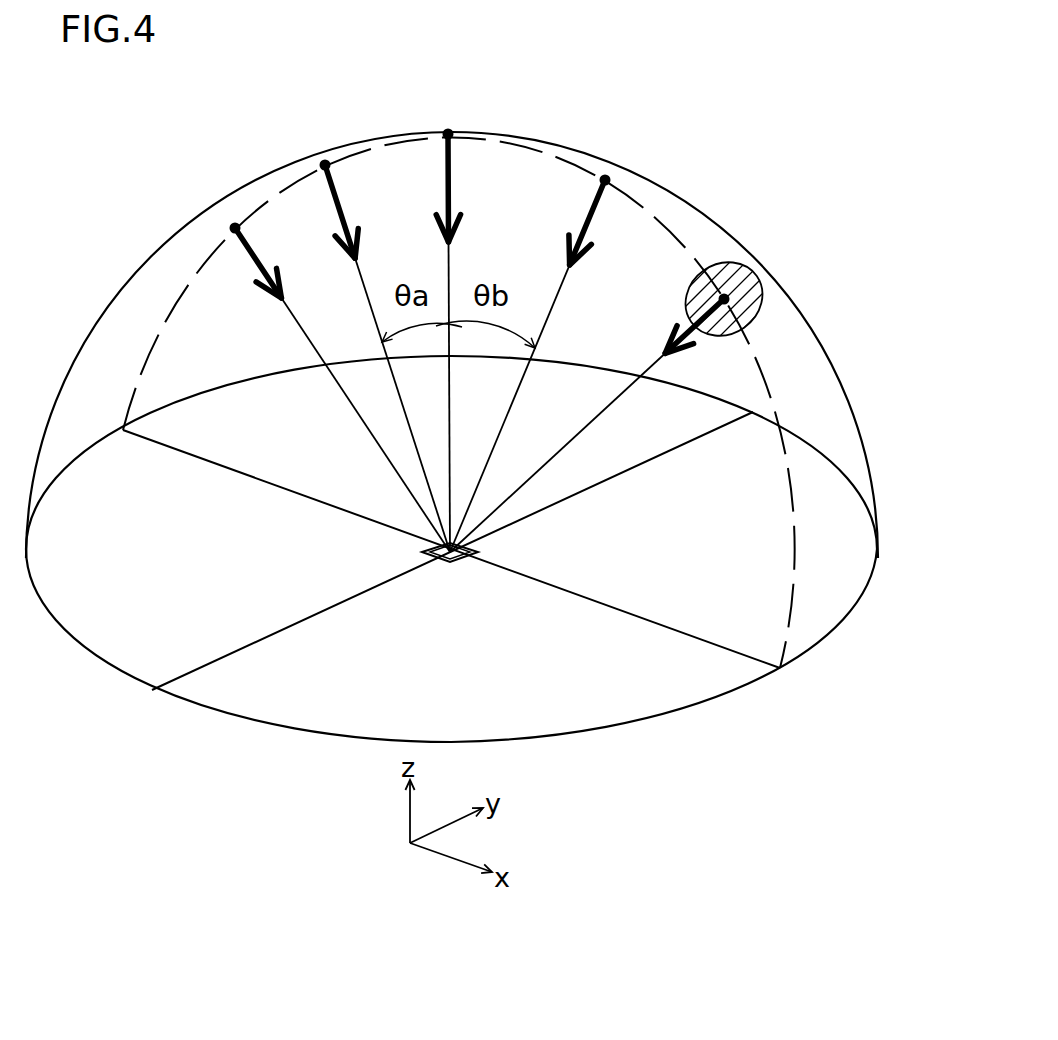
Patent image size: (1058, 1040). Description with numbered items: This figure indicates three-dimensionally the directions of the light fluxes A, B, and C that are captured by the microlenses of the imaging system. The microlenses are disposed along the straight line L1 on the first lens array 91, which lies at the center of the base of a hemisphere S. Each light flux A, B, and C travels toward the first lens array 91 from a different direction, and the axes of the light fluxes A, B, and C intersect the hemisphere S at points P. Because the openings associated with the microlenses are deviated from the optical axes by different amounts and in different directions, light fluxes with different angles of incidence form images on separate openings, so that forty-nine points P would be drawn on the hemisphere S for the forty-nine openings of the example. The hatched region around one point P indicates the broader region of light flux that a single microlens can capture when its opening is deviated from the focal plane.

The first lens array 91 is at (453, 562).
The hemisphere S is at (122, 290).
The point P is at (606, 180).
The straight line L1 is at (588, 598).
The light flux A is at (345, 211).
The light flux B is at (582, 222).
The light flux C is at (457, 188).